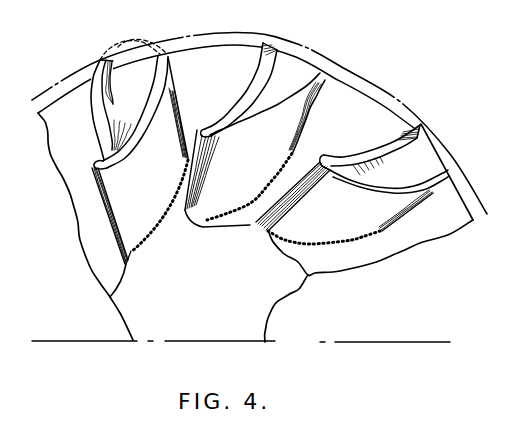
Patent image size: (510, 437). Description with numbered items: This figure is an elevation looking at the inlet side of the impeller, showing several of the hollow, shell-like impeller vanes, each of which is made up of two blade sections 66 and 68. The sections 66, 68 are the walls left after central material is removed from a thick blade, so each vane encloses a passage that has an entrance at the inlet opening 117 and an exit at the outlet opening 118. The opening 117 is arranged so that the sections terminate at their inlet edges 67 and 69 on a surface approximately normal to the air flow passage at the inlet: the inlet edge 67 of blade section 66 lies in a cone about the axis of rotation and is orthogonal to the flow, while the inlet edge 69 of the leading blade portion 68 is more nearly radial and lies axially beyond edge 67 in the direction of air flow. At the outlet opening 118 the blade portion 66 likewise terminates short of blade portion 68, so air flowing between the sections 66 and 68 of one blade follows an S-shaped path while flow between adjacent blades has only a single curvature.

The blade section 66 is at (160, 184).
The inlet edge 67 is at (207, 181).
The blade section 68 is at (254, 88).
The inlet edge 69 is at (167, 212).
The opening 117 is at (190, 139).
The outlet opening 118 is at (303, 72).